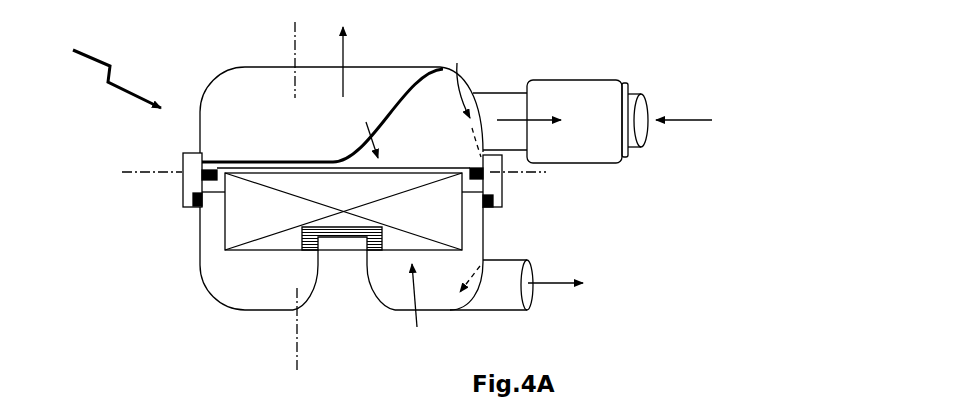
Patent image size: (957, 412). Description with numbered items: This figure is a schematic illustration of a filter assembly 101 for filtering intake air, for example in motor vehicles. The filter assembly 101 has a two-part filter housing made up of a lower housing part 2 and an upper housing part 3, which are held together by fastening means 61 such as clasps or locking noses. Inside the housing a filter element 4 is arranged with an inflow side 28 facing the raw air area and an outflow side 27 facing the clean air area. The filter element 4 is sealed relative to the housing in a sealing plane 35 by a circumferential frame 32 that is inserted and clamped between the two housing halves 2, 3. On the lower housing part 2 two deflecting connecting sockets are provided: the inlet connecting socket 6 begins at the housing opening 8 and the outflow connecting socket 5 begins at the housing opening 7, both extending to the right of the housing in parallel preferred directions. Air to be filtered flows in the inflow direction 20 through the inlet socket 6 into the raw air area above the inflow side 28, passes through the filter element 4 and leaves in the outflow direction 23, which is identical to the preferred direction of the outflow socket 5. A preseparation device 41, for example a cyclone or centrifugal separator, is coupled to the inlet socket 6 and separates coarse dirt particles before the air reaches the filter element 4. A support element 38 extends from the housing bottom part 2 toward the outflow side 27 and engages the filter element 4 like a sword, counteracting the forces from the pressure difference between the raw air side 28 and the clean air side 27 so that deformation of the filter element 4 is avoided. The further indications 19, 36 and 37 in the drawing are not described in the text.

The filter assembly 101 is at (104, 66).
The lower housing part 2 is at (221, 292).
The upper housing part 3 is at (221, 99).
The filter element 4 is at (237, 235).
The outflow connecting socket 5 is at (507, 262).
The inlet connecting socket 6 is at (497, 113).
The housing opening 7 is at (452, 309).
The housing opening 8 is at (465, 99).
The longitudinal axis 19 is at (294, 62).
The inflow direction 20 is at (542, 115).
The outflow direction 23 is at (552, 276).
The outflow side 27 is at (415, 312).
The inflow side 28 is at (357, 134).
The circumferential frame 32 is at (217, 193).
The sealing plane 35 is at (148, 174).
The seal 36 is at (476, 168).
The upward flow 37 is at (352, 53).
The support element 38 is at (342, 298).
The preseparation device 41 is at (598, 102).
The fastening means 61 is at (190, 165).